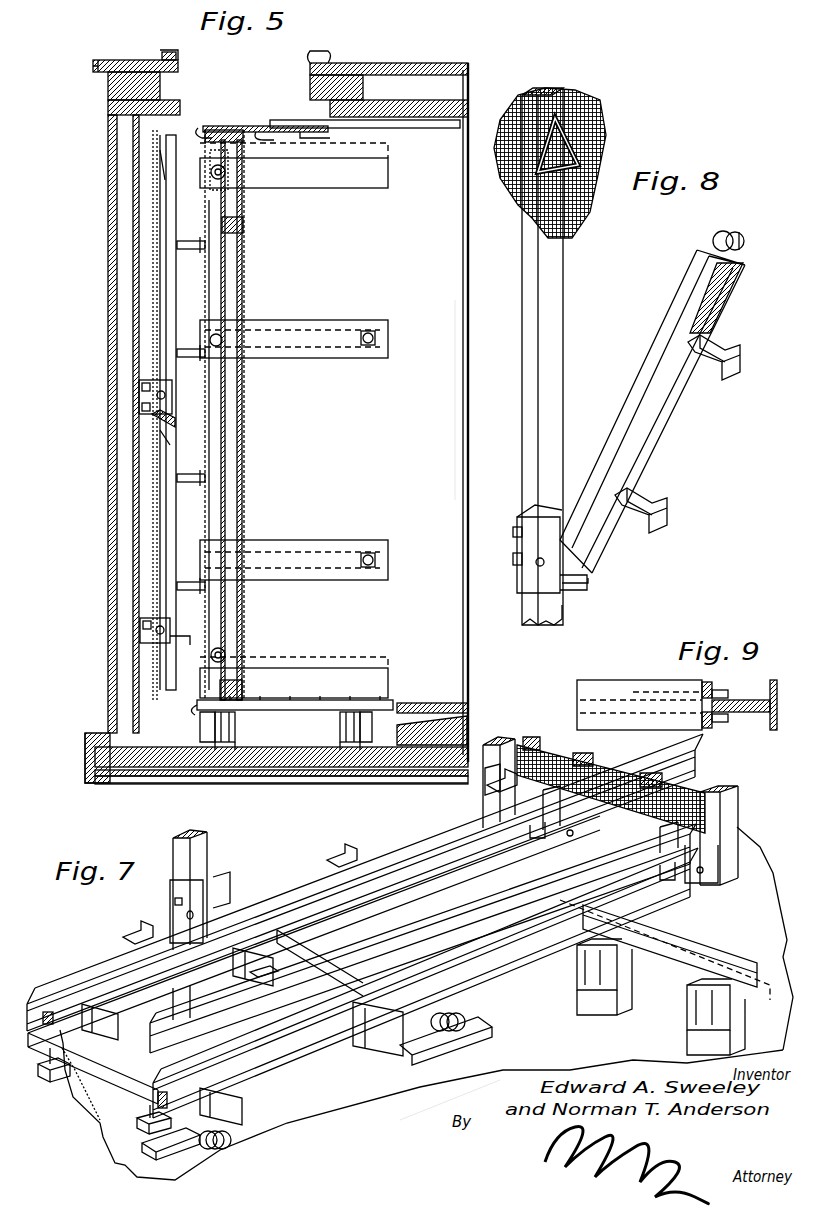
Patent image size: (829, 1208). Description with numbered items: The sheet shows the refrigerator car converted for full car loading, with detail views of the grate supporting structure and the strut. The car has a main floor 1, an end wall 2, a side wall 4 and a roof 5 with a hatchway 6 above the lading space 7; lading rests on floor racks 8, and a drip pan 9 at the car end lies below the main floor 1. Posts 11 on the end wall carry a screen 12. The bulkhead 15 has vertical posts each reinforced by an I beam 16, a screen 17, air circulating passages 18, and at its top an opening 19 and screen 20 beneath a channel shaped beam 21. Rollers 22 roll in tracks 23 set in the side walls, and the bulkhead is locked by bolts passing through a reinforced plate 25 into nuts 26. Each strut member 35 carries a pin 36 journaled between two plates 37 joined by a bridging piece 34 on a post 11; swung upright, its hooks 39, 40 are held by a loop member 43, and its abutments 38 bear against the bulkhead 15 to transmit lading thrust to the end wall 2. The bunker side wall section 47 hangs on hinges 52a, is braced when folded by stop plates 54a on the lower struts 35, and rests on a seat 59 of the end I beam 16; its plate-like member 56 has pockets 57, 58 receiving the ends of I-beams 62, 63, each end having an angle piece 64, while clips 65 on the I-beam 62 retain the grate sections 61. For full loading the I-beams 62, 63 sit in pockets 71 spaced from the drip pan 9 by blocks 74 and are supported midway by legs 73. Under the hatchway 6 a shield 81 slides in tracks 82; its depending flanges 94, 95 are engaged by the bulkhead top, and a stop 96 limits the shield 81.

In FIG. 5, the main floor 1 is at (433, 740).
In FIG. 7, the main floor 1 is at (758, 1045).
In FIG. 5, the car end wall 2 is at (110, 358).
In FIG. 5, the car side wall 4 is at (438, 412).
In FIG. 7, the car side wall 4 is at (752, 858).
In FIG. 5, the car roof 5 is at (388, 66).
In FIG. 5, the hatchway 6 is at (262, 43).
In FIG. 5, the lading space 7 is at (442, 453).
In FIG. 5, the floor racks 8 is at (446, 708).
In FIG. 5, the drip pan 9 is at (300, 752).
In FIG. 7, the drip pan 9 is at (420, 1088).
In FIG. 5, the post 11 is at (165, 331).
In FIG. 8, the post 11 is at (555, 290).
In FIG. 7, the post 11 is at (195, 853).
In FIG. 5, the screen 12 is at (152, 283).
In FIG. 8, the screen 12 is at (598, 127).
In FIG. 5, the bulkhead 15 is at (244, 509).
In FIG. 9, the I beam 16 is at (770, 720).
In FIG. 5, the screen 17 is at (212, 513).
In FIG. 5, the air circulating passages 18 is at (222, 448).
In FIG. 5, the opening 19 is at (233, 206).
In FIG. 5, the screen 20 is at (238, 169).
In FIG. 5, the channel shaped beam 21 is at (212, 151).
In FIG. 5, the roller 22 is at (205, 686).
In FIG. 5, the track 23 is at (352, 181).
In FIG. 7, the track 23 is at (665, 935).
In FIG. 5, the reinforced plate 25 is at (312, 322).
In FIG. 5, the nut 26 is at (380, 338).
In FIG. 5, the bridging piece 34 is at (170, 405).
In FIG. 8, the bridging piece 34 is at (575, 592).
In FIG. 5, the strut member 35 is at (160, 227).
In FIG. 8, the strut member 35 is at (660, 415).
In FIG. 9, the strut member 35 is at (634, 682).
In FIG. 7, the strut member 35 is at (345, 975).
In FIG. 5, the pin 36 is at (166, 388).
In FIG. 8, the pin 36 is at (536, 562).
In FIG. 7, the pin 36 is at (182, 912).
In FIG. 5, the plate 37 is at (140, 398).
In FIG. 8, the plate 37 is at (520, 542).
In FIG. 7, the plate 37 is at (215, 888).
In FIG. 5, the abutment 38 is at (190, 243).
In FIG. 8, the abutment 38 is at (722, 346).
In FIG. 7, the abutment 38 is at (52, 1080).
In FIG. 8, the hook 39 is at (716, 240).
In FIG. 9, the hook 39 is at (726, 728).
In FIG. 7, the hook 39 is at (222, 1150).
In FIG. 8, the second hook 40 is at (744, 244).
In FIG. 9, the second hook 40 is at (718, 698).
In FIG. 7, the second hook 40 is at (228, 1136).
In FIG. 5, the loop member 43 is at (210, 173).
In FIG. 8, the loop member 43 is at (575, 170).
In FIG. 5, the side wall section 47 is at (160, 153).
In FIG. 7, the side wall section 47 is at (738, 808).
In FIG. 7, the hinge 52a is at (545, 748).
In FIG. 7, the stop plate 54a is at (180, 1148).
In FIG. 7, the plate-like member 56 is at (580, 835).
In FIG. 7, the seat 57 is at (552, 809).
In FIG. 7, the seat 58 is at (655, 824).
In FIG. 5, the rest 59 is at (208, 640).
In FIG. 5, the grate section 61 is at (280, 702).
In FIG. 5, the I-beam 62 is at (212, 723).
In FIG. 7, the I-beam 62 is at (383, 862).
In FIG. 5, the I-beam 63 is at (360, 723).
In FIG. 7, the I-beam 63 is at (450, 960).
In FIG. 7, the angle piece 64 is at (538, 830).
In FIG. 5, the clip 65 is at (200, 712).
In FIG. 7, the clip 65 is at (123, 941).
In FIG. 5, the seat 71 is at (340, 723).
In FIG. 7, the seat 71 is at (578, 961).
In FIG. 5, the leg 73 is at (215, 739).
In FIG. 7, the leg 73 is at (230, 1000).
In FIG. 7, the block 74 is at (575, 1006).
In FIG. 5, the shield 81 is at (282, 124).
In FIG. 5, the track 82 is at (428, 128).
In FIG. 5, the depending flange 94 is at (200, 128).
In FIG. 5, the depending flange 95 is at (258, 130).
In FIG. 5, the stop 96 is at (320, 135).